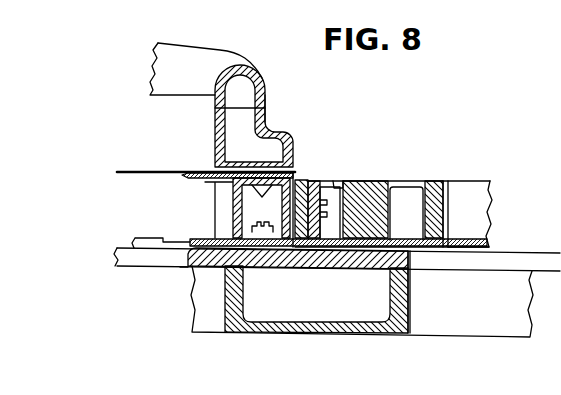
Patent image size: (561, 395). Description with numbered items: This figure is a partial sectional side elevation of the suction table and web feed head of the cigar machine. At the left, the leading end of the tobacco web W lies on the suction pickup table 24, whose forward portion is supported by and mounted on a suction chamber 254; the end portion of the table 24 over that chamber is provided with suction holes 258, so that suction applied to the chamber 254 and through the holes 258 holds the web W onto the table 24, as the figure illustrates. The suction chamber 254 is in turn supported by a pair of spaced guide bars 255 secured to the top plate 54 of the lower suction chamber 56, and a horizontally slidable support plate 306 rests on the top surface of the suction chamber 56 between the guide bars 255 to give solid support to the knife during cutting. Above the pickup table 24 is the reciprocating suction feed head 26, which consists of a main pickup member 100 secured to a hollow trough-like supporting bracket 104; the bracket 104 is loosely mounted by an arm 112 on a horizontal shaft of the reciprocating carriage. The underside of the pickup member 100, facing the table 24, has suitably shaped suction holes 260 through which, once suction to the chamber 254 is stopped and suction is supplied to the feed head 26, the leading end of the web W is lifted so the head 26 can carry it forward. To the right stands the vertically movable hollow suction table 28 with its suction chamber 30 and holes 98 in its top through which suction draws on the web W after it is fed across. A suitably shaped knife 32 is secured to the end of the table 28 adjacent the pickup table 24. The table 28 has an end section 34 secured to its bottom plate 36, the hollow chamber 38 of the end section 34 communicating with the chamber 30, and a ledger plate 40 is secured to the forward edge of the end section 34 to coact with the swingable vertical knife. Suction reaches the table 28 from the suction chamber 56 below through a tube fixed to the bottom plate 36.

The suction feed head 26 is at (270, 80).
The arm 112 is at (160, 96).
The supporting bracket 104 is at (217, 106).
The main pickup member 100 is at (268, 120).
The suction holes 260 is at (241, 152).
The tobacco web W is at (148, 171).
The suction pickup table 24 is at (185, 176).
The suction holes 258 is at (261, 208).
The suction chamber 254 is at (214, 228).
The hollow chamber 38 is at (447, 228).
The knife 32 is at (297, 180).
The suction table 28 is at (326, 181).
The holes 98 is at (343, 186).
The suction chamber 30 is at (360, 183).
The ledger plate 40 is at (447, 196).
The end section 34 is at (432, 181).
The bottom plate 36 is at (489, 247).
The guide bars 255 is at (143, 237).
The top plate 54 is at (554, 260).
The support plate 306 is at (181, 267).
The suction chamber 56 is at (409, 300).